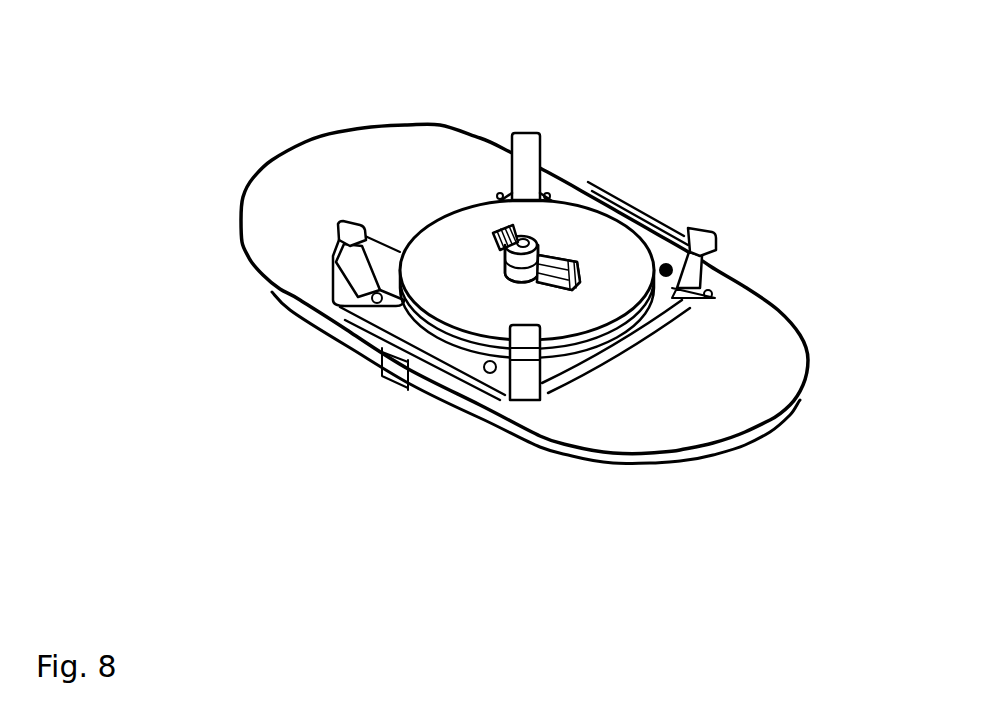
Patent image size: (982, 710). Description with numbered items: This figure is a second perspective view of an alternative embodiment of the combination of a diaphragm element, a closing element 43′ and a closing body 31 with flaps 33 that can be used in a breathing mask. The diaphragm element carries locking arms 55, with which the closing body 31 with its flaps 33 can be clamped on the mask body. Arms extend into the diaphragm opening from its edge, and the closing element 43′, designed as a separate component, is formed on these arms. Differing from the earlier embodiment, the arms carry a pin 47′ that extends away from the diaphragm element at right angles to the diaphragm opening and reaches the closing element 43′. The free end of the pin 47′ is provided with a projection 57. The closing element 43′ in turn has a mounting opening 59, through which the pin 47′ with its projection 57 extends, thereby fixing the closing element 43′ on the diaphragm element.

The closing body 31 is at (408, 337).
The flaps 33 is at (341, 185).
The closing element 43′ is at (478, 282).
The pin 47′ is at (502, 225).
The locking arms 55 is at (700, 232).
The projection 57 is at (587, 273).
The mounting opening 59 is at (527, 283).